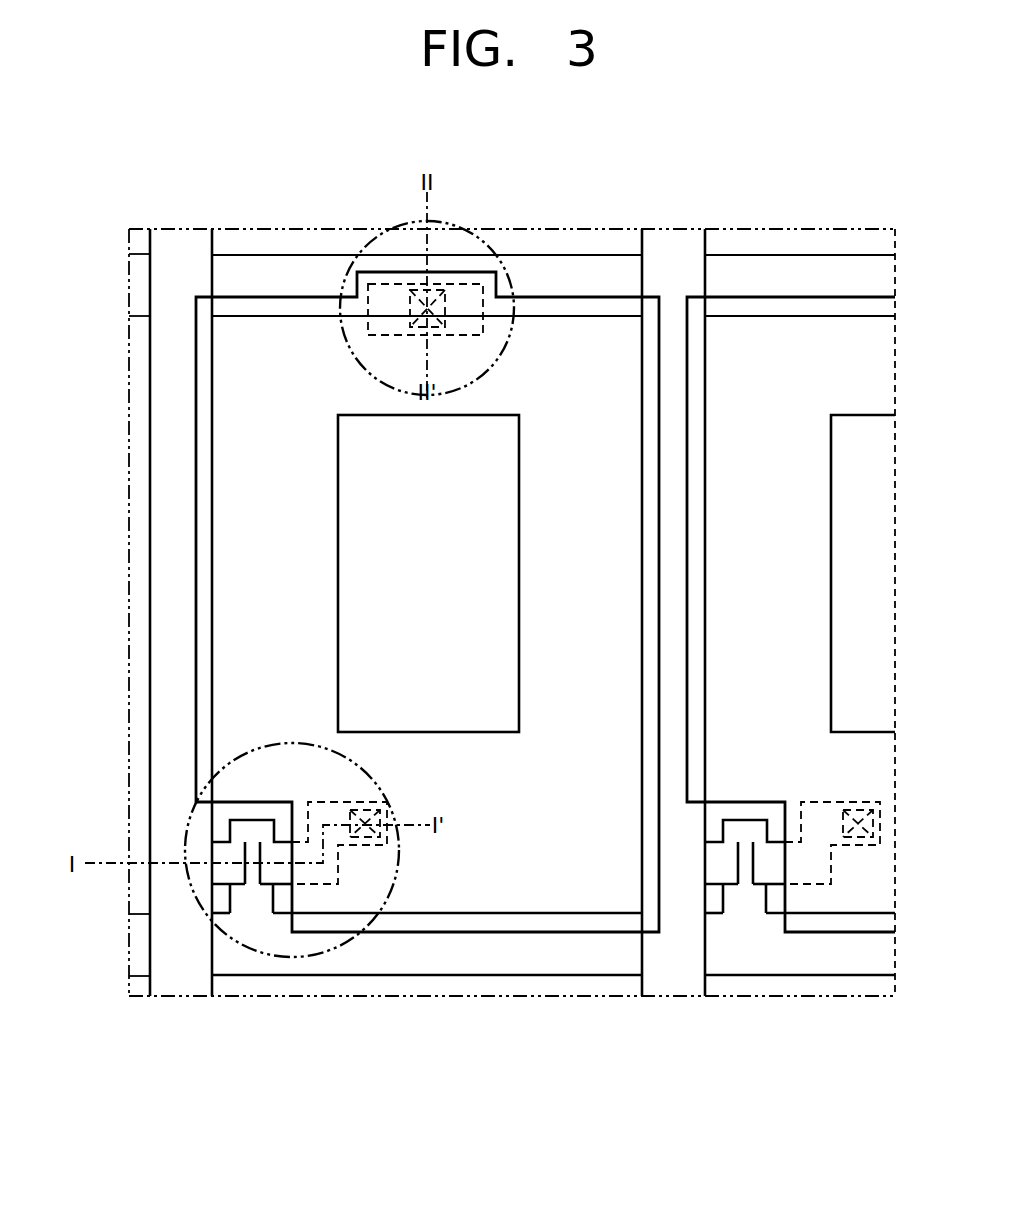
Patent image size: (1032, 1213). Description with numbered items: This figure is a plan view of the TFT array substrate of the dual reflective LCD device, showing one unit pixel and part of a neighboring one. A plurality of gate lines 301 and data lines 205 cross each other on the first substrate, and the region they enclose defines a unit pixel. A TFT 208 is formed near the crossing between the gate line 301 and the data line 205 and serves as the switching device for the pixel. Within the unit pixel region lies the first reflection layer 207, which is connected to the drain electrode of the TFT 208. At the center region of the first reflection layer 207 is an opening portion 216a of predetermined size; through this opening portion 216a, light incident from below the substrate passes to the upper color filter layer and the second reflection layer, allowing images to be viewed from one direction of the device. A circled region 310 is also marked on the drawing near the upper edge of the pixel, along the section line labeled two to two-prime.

The data line 205 is at (163, 635).
The first reflection layer 207 is at (540, 875).
The TFT 208 is at (193, 808).
The opening portion 216a is at (353, 518).
The gate line 301 is at (421, 965).
The storage capacitor region 310 is at (482, 243).